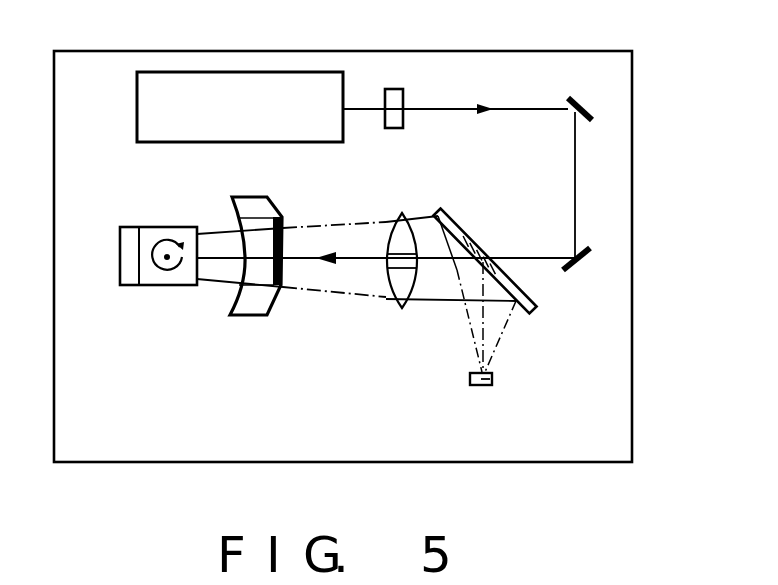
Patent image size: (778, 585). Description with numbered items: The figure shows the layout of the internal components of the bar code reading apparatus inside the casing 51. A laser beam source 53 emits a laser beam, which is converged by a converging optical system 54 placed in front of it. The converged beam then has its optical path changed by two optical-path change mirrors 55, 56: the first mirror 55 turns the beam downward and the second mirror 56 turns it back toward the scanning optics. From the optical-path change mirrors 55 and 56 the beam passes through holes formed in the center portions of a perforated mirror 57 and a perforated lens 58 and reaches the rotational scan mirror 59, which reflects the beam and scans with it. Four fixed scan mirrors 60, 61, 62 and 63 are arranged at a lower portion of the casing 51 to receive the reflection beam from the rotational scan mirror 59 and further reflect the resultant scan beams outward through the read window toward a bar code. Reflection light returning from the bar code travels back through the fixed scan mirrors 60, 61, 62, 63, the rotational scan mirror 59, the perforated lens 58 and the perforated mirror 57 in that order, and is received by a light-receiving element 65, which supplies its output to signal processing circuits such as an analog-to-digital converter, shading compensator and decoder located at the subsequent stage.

The casing 51 is at (632, 336).
The laser beam source 53 is at (234, 72).
The converging optical system 54 is at (396, 89).
The optical-path change mirror 55 is at (580, 96).
The optical-path change mirror 56 is at (570, 270).
The perforated mirror 57 is at (462, 238).
The perforated lens 58 is at (405, 238).
The rotational scan mirror 59 is at (143, 227).
The fixed scan mirror 60 is at (263, 245).
The fixed scan mirror 61 is at (300, 307).
The fixed scan mirror 62 is at (248, 213).
The fixed scan mirror 63 is at (253, 306).
The light-receiving element 65 is at (492, 380).